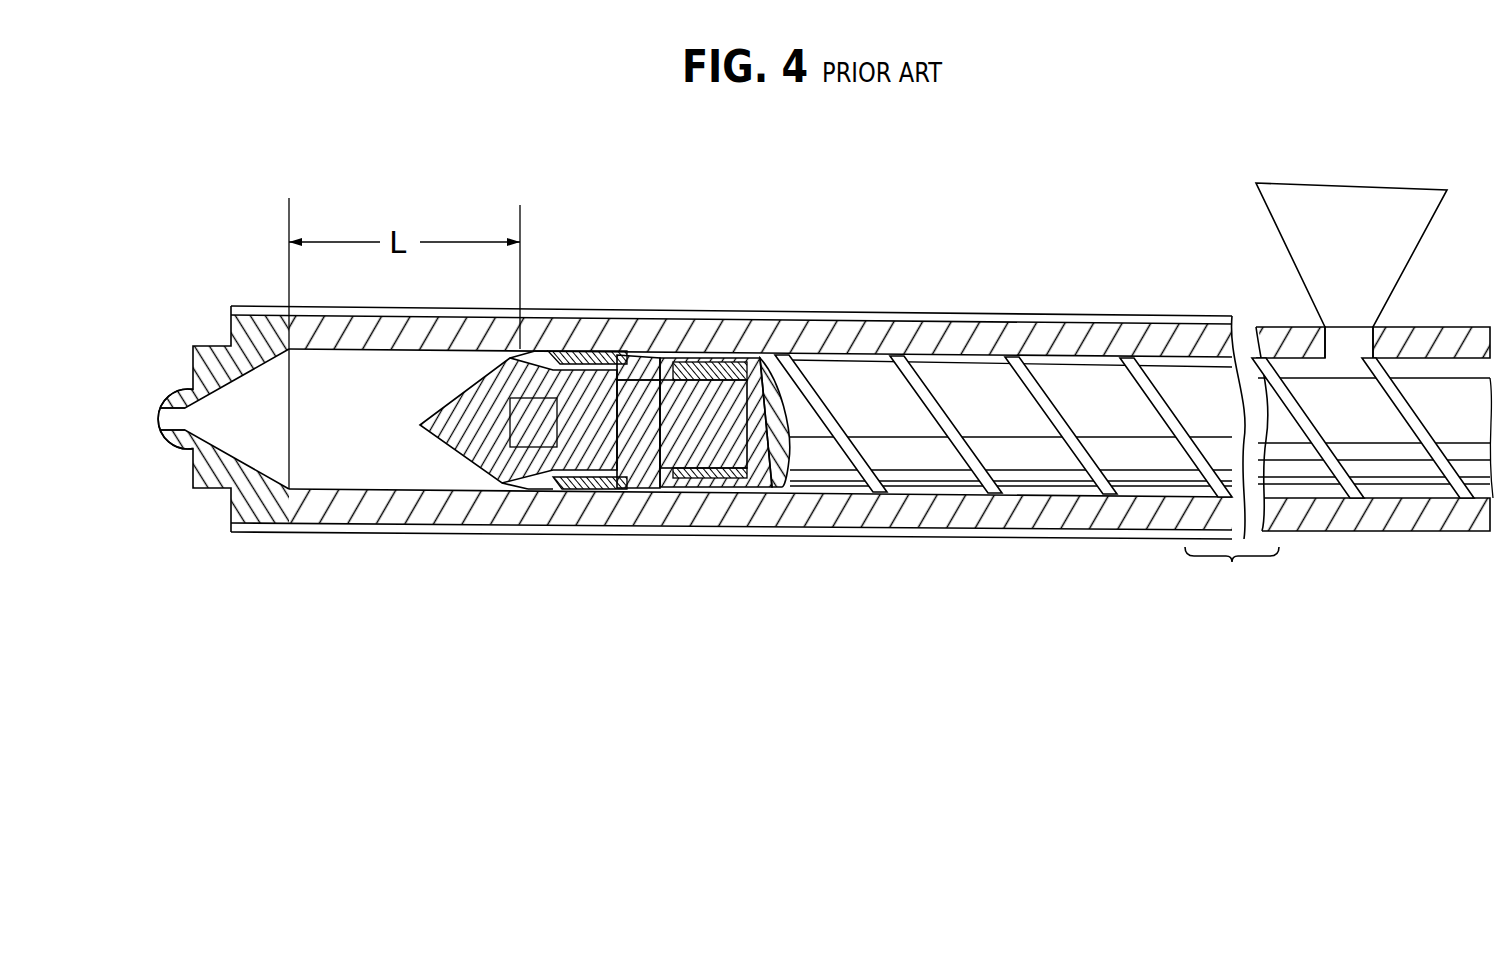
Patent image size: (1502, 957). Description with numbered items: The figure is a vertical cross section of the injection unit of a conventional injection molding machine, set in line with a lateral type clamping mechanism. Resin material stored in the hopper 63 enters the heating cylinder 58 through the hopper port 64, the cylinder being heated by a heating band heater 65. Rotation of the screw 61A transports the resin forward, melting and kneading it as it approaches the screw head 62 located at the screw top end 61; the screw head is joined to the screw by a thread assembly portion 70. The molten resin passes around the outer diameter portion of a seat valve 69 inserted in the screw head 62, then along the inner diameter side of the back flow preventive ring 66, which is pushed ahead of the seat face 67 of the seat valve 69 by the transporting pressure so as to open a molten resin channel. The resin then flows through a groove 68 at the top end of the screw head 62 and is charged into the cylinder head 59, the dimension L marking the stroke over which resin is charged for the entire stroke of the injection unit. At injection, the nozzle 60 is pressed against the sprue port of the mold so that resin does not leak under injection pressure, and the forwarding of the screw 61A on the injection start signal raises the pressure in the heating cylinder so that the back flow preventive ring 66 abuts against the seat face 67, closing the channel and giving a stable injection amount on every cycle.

The heating cylinder 58 is at (1127, 348).
The cylinder head 59 is at (250, 325).
The nozzle 60 is at (178, 390).
The screw top end 61 is at (712, 368).
The screw 61A is at (856, 405).
The screw head 62 is at (477, 427).
The hopper 63 is at (1320, 237).
The hopper port 64 is at (1347, 343).
The heating band heater 65 is at (973, 320).
The back flow preventive ring 66 is at (593, 360).
The seat face 67 is at (642, 363).
The groove 68 is at (548, 474).
The seat valve 69 is at (638, 440).
The thread assembly portion 70 is at (719, 433).